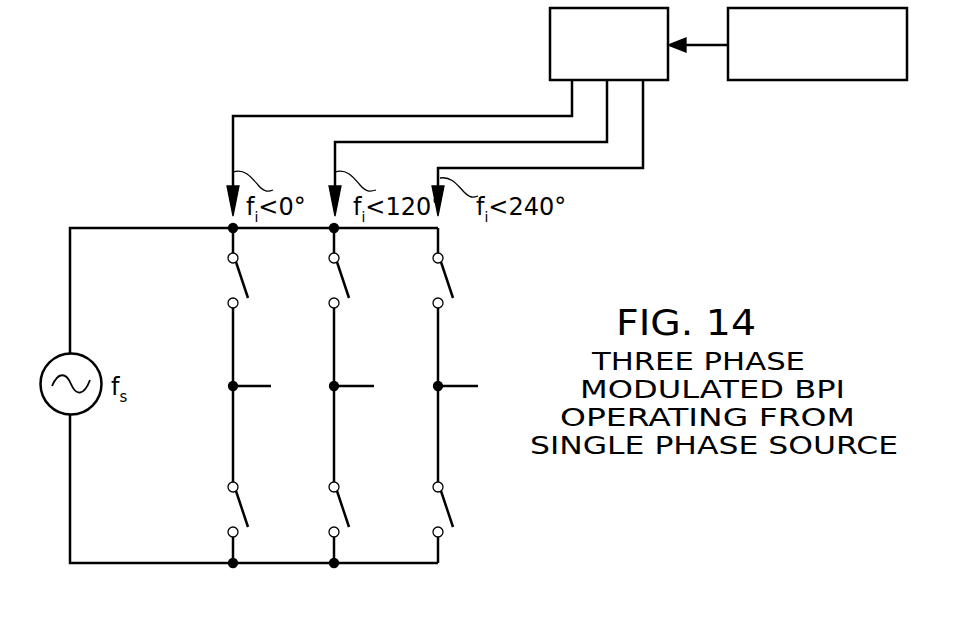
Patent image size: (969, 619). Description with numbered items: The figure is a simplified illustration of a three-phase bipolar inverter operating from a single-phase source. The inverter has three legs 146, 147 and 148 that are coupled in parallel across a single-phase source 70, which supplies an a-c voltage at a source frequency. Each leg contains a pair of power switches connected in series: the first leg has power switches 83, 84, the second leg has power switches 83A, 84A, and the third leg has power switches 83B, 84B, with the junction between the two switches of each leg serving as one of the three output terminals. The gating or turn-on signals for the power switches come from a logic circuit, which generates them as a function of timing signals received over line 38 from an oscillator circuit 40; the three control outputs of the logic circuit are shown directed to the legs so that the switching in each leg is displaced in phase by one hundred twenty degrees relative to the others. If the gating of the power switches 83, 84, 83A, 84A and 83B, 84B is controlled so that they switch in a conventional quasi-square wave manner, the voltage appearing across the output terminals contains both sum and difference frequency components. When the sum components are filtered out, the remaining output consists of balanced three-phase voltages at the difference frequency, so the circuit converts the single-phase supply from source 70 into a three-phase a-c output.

The line 38 is at (591, 44).
The oscillator circuit 40 is at (817, 60).
The single-phase source 70 is at (58, 384).
The power switch 83 is at (223, 268).
The power switch 83A is at (319, 268).
The power switch 83B is at (423, 268).
The power switch 84 is at (225, 522).
The power switch 84A is at (319, 522).
The power switch 84B is at (423, 522).
The leg 146 is at (225, 424).
The leg 147 is at (327, 424).
The leg 148 is at (432, 424).